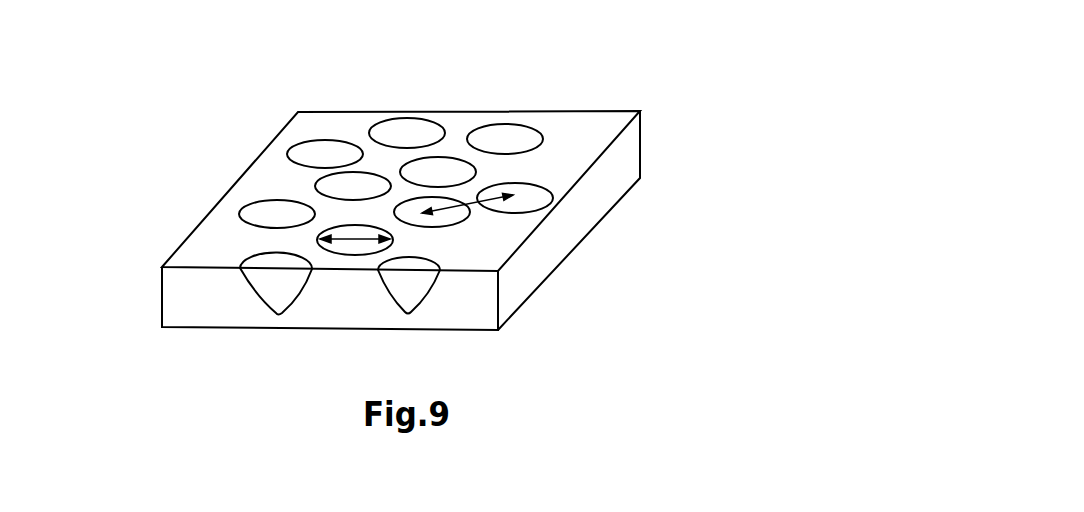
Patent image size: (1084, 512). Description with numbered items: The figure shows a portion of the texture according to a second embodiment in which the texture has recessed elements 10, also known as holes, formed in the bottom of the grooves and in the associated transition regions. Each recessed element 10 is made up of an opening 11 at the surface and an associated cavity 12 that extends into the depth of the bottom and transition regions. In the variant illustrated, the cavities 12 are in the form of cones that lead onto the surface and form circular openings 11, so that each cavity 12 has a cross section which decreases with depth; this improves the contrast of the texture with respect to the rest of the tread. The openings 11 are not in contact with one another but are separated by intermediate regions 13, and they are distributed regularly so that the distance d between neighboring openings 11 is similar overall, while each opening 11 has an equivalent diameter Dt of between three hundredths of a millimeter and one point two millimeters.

The recessed elements 10 is at (105, 38).
The openings 11 is at (268, 199).
The cavities 12 is at (275, 277).
The intermediate regions 13 is at (388, 162).